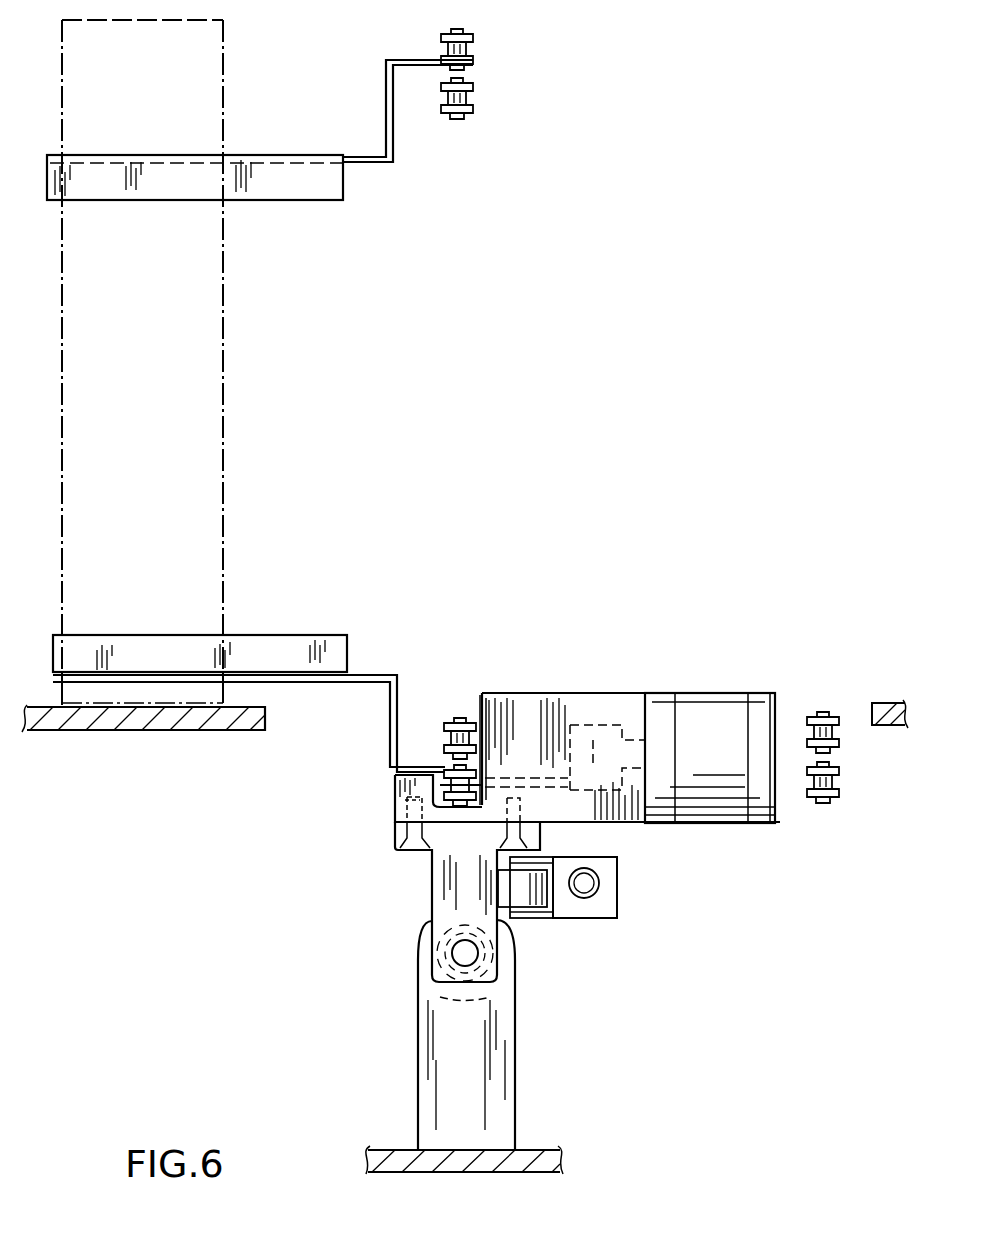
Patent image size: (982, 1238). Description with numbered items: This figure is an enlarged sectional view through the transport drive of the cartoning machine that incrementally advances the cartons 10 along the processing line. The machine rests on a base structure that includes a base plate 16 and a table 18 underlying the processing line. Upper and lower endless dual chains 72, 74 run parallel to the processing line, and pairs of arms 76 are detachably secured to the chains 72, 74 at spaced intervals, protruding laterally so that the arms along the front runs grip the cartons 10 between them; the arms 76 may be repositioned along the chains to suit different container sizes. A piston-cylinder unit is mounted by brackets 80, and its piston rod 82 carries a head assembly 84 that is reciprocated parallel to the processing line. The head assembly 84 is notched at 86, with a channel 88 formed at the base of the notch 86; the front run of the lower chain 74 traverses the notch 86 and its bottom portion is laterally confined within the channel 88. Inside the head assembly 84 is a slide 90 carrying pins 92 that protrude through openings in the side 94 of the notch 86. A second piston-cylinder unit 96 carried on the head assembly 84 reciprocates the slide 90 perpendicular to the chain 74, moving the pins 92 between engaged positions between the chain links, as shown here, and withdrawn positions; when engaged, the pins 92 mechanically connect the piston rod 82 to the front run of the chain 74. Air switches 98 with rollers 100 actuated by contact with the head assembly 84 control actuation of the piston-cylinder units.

The collapsed carton 10 is at (222, 355).
The base plate 16 is at (372, 1152).
The table 18 is at (190, 718).
The upper endless dual chain 72 is at (474, 93).
The lower endless dual chain 74 is at (445, 770).
The arms 76 is at (387, 163).
The brackets 80 is at (437, 1025).
The piston rod 82 is at (455, 955).
The head assembly 84 is at (556, 810).
The notch 86 is at (467, 706).
The channel 88 is at (397, 797).
The slide 90 is at (572, 722).
The pins 92 is at (510, 778).
The side of notch 94 is at (481, 693).
The piston-cylinder unit 96 is at (701, 712).
The air switches 98 is at (617, 888).
The rollers 100 is at (528, 928).